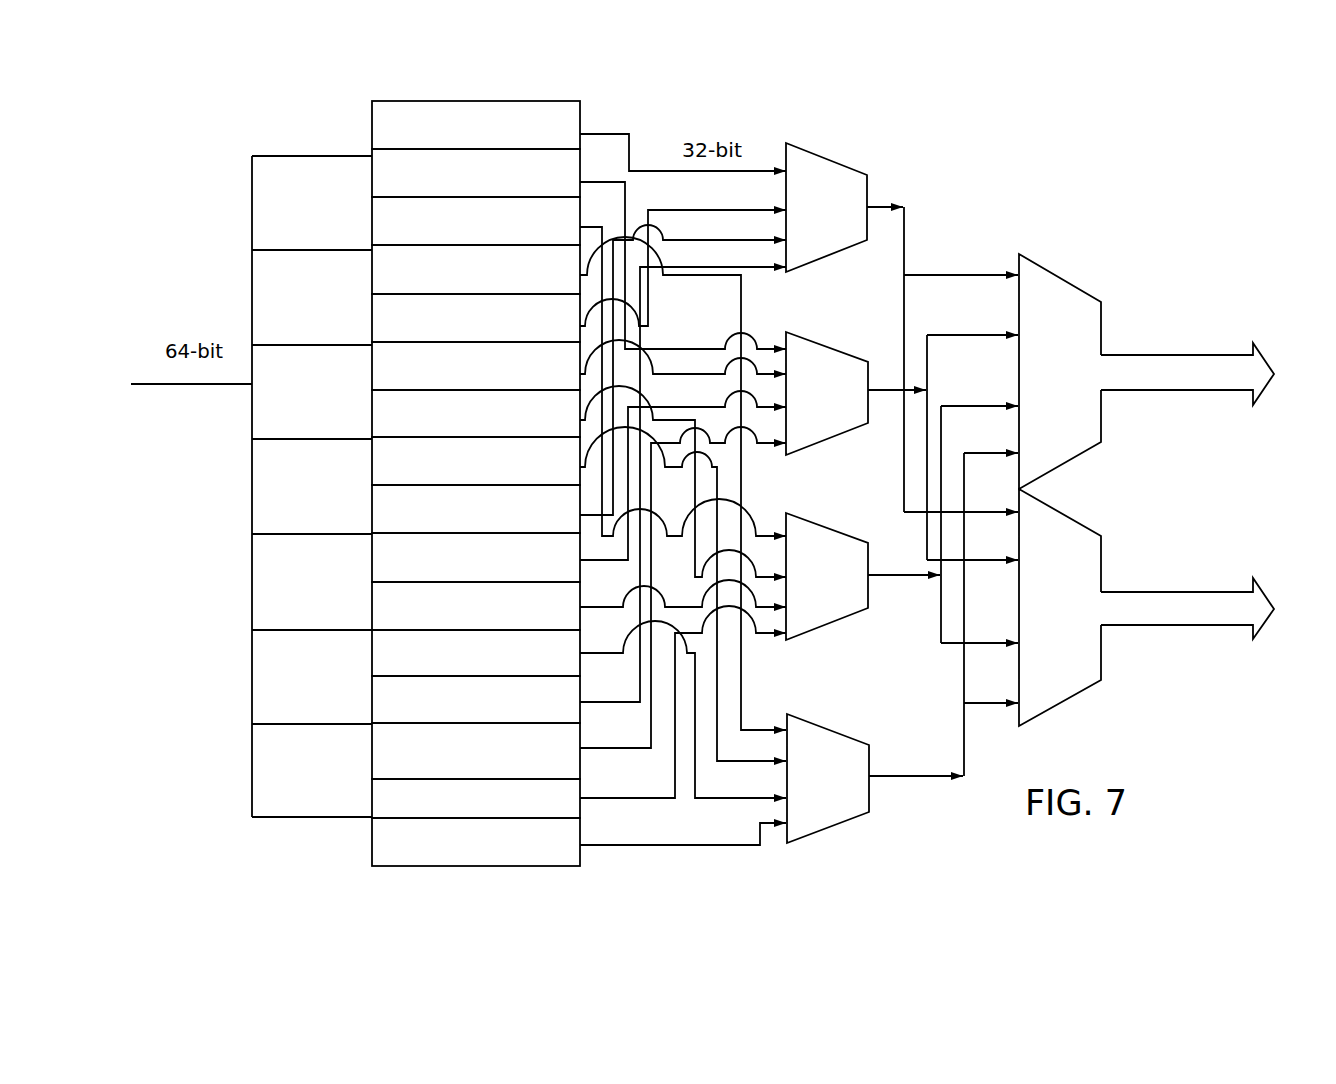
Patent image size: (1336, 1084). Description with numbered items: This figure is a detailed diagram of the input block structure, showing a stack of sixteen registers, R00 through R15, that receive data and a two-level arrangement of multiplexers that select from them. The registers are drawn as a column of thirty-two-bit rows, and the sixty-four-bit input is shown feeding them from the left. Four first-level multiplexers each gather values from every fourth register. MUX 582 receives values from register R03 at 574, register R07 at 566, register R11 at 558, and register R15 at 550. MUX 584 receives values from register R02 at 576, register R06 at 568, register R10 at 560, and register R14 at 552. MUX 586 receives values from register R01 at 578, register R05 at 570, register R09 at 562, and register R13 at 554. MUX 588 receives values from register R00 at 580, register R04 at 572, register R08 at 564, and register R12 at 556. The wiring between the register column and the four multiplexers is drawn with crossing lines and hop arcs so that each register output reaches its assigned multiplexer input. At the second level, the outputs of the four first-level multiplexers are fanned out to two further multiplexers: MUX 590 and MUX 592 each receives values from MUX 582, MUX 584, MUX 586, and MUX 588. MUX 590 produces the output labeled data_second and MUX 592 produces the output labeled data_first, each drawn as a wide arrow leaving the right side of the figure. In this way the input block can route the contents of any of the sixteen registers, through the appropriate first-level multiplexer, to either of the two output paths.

The register R15 550 is at (373, 126).
The register R14 552 is at (373, 177).
The register R13 554 is at (373, 218).
The register R12 556 is at (373, 281).
The register R11 558 is at (373, 328).
The register R10 560 is at (373, 367).
The register R09 562 is at (373, 413).
The register R08 564 is at (373, 466).
The register R07 566 is at (373, 503).
The register R06 568 is at (373, 565).
The register R05 570 is at (373, 604).
The register R04 572 is at (373, 659).
The register R03 574 is at (373, 700).
The register R02 576 is at (373, 762).
The register R01 578 is at (373, 799).
The register R00 580 is at (373, 844).
The MUX 582 is at (810, 263).
The MUX 584 is at (813, 447).
The MUX 586 is at (815, 630).
The MUX 588 is at (869, 790).
The MUX 590 is at (1102, 409).
The MUX 592 is at (1102, 652).